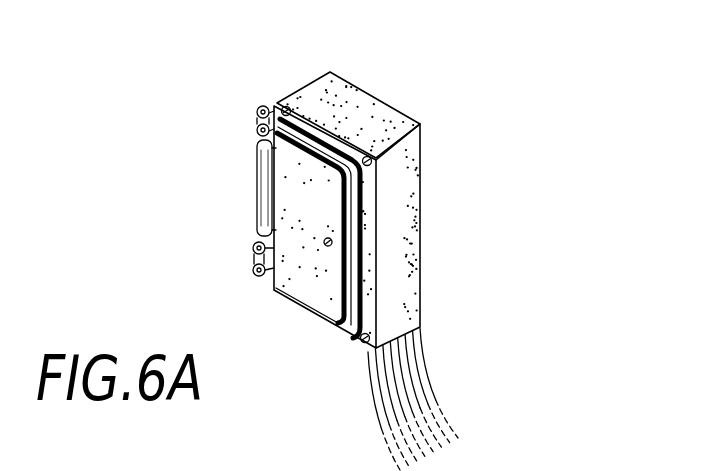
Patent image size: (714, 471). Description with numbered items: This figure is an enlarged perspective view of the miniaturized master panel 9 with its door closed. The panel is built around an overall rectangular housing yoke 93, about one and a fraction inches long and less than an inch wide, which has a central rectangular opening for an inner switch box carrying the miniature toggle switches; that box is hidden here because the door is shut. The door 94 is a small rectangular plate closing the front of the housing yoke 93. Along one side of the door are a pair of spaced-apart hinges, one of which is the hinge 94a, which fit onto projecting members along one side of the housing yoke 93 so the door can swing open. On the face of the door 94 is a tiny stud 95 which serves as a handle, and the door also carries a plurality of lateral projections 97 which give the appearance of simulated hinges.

The master panel 9 is at (407, 88).
The housing yoke 93 is at (400, 162).
The door 94 is at (307, 250).
The hinge 94a is at (257, 112).
The stud 95 is at (328, 246).
The lateral projections 97 is at (257, 183).